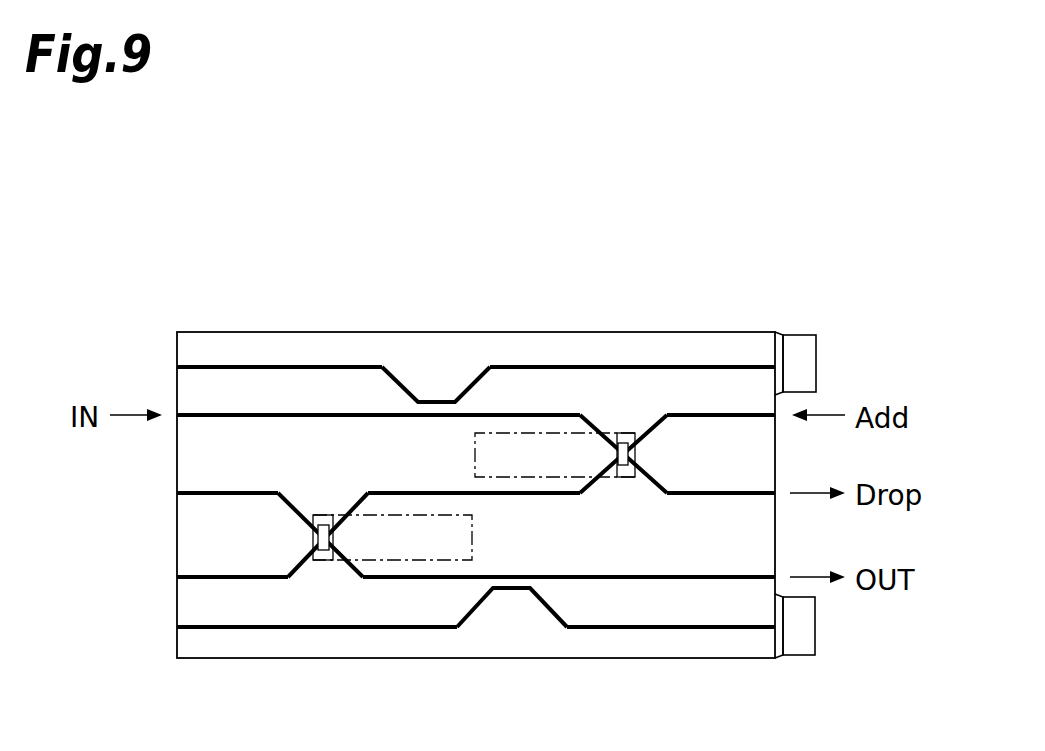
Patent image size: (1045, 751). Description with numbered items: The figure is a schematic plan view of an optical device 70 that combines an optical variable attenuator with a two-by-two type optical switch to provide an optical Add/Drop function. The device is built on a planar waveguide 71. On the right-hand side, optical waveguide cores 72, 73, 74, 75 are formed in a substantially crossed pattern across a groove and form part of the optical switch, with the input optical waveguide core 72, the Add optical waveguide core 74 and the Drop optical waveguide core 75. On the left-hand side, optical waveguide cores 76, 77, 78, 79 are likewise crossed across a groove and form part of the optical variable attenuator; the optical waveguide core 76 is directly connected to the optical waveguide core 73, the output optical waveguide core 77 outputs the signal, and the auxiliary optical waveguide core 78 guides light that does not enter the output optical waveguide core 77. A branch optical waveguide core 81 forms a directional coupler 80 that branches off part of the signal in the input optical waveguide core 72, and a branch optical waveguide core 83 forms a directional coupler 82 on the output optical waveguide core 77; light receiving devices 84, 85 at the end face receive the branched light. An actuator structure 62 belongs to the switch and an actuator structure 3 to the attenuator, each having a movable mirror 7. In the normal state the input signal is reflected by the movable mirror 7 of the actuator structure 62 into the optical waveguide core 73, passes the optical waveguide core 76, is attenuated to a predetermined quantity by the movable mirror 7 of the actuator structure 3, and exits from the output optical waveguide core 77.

The optical device 70 is at (655, 198).
The planar waveguide 71 is at (360, 340).
The input optical waveguide core 72 is at (553, 413).
The optical waveguide core 73 is at (548, 496).
The Add optical waveguide core 74 is at (725, 418).
The Drop optical waveguide core 75 is at (710, 496).
The optical waveguide core 76 is at (385, 490).
The output optical waveguide core 77 is at (638, 575).
The auxiliary optical waveguide core 78 is at (240, 575).
The optical waveguide core 79 is at (240, 490).
The directional coupler 80 is at (440, 382).
The branch optical waveguide core 81 is at (670, 365).
The directional coupler 82 is at (517, 602).
The branch optical waveguide core 83 is at (645, 630).
The light receiving device 84 is at (805, 360).
The light receiving device 85 is at (805, 630).
The movable mirror 7 is at (623, 440).
The actuator structure 62 is at (475, 443).
The actuator structure 3 is at (403, 562).